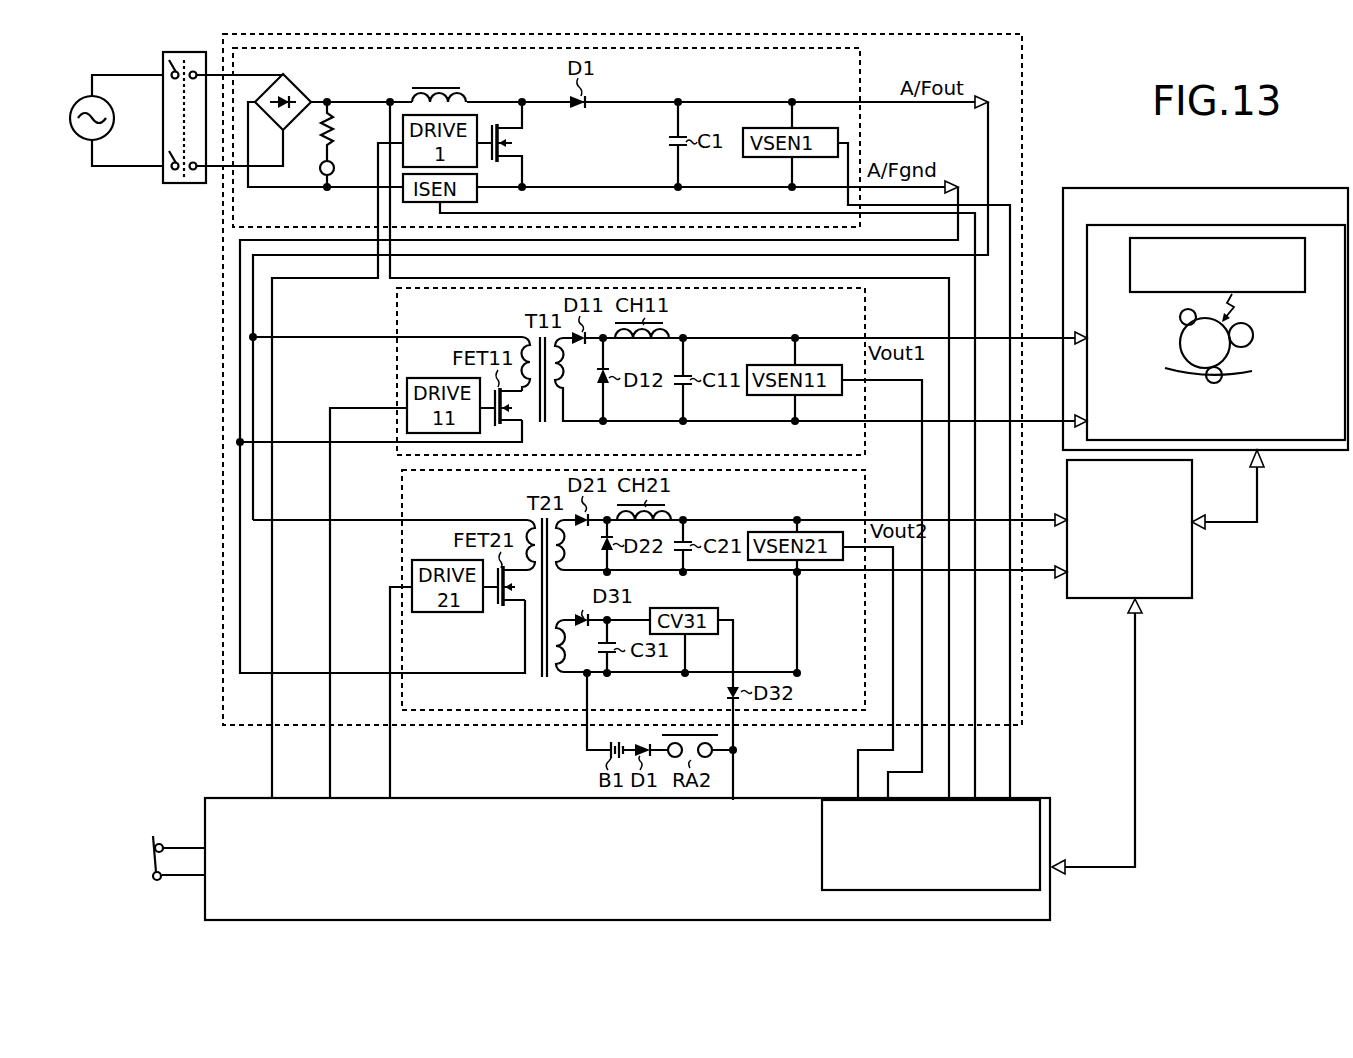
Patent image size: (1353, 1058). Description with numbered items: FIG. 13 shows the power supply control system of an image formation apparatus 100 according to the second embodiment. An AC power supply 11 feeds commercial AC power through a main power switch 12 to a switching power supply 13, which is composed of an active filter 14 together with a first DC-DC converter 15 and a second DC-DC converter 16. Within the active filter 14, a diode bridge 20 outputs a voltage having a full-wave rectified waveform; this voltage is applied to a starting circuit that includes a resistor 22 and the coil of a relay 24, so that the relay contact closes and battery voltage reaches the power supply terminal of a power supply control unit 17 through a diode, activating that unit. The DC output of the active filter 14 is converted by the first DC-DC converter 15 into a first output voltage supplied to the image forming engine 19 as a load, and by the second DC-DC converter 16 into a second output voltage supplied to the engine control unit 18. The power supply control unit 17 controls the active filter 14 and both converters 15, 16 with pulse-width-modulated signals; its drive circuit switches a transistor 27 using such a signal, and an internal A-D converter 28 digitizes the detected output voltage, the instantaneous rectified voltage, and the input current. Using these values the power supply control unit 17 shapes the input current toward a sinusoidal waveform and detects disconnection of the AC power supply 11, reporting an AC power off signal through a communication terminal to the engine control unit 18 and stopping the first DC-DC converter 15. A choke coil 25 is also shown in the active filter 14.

The AC power supply 11 is at (82, 151).
The main power switch 12 is at (184, 183).
The switching power supply 13 is at (1020, 76).
The active filter 14 is at (857, 64).
The first DC-DC converter 15 is at (858, 311).
The second DC-DC converter 16 is at (862, 496).
The power supply control unit 17 is at (480, 798).
The engine control unit 18 is at (1096, 600).
The image forming engine 19 is at (1262, 225).
The diode bridge 20 is at (304, 90).
The resistor 22 is at (341, 125).
The relay 24 is at (320, 172).
The choke coil CH1 25 is at (470, 92).
The transistor 27 is at (517, 150).
The A-D converter 28 is at (856, 890).
The image forming apparatus 100 is at (1196, 188).